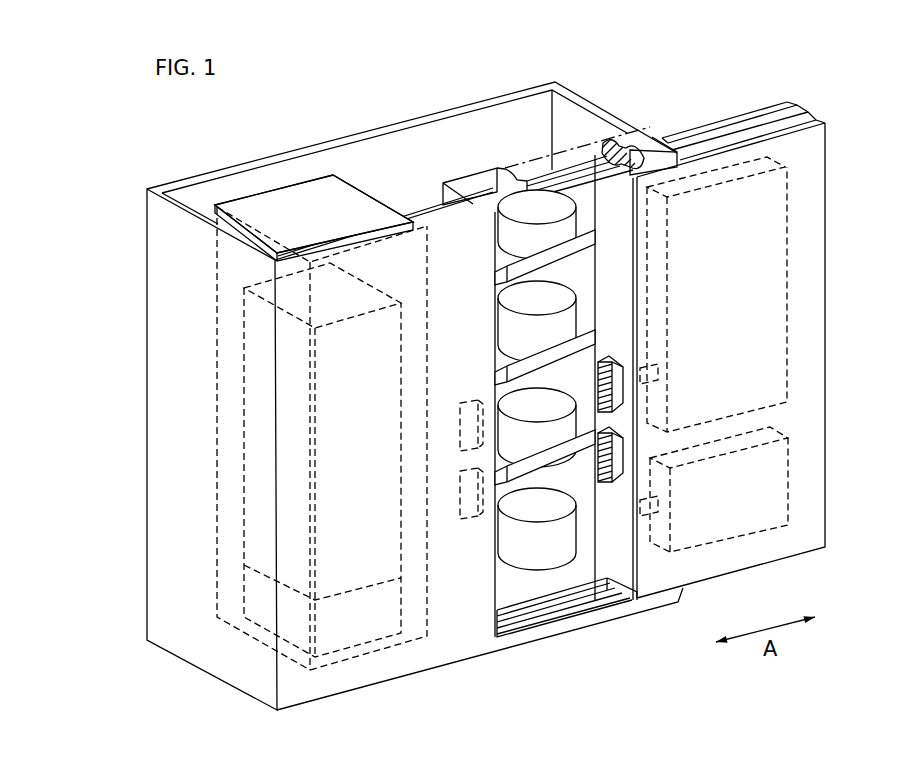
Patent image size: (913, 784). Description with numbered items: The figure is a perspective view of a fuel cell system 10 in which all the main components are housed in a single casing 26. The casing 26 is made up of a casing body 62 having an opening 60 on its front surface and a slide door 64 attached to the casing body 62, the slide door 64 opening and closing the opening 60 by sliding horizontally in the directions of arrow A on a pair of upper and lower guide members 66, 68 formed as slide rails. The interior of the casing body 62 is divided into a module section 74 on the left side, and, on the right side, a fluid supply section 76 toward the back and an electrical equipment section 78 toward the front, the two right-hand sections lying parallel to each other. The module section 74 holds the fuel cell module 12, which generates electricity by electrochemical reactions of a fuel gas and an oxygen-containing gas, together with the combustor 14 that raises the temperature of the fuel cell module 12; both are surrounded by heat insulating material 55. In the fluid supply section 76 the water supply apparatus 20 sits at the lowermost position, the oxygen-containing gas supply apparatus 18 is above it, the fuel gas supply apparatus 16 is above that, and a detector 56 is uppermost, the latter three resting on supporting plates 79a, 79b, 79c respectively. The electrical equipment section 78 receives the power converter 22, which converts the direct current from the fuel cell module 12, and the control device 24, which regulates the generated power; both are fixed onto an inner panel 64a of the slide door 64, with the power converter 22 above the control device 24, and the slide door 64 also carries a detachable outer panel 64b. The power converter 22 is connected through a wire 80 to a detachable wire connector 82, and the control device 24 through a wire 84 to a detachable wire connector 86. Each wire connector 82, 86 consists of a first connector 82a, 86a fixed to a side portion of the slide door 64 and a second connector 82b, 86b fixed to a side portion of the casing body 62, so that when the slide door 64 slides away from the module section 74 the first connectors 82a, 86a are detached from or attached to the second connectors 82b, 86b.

The fuel cell system 10 is at (214, 123).
The fuel cell module 12 is at (238, 402).
The combustor 14 is at (363, 632).
The fuel gas supply apparatus 16 is at (510, 333).
The oxygen-containing gas supply apparatus 18 is at (513, 438).
The water supply apparatus 20 is at (510, 548).
The power converter 22 is at (790, 320).
The control device 24 is at (790, 470).
The casing 26 is at (128, 271).
The heat insulating material 55 is at (357, 207).
The detector 56 is at (507, 233).
The opening 60 is at (543, 580).
The casing body 62 is at (482, 103).
The slide door 64 is at (824, 101).
The inner panel 64a is at (731, 110).
The outer panel 64b is at (815, 218).
The guide member 66 is at (600, 604).
The guide member 68 is at (577, 163).
The module section 74 is at (280, 183).
The fluid supply section 76 is at (572, 120).
The electrical equipment section 78 is at (806, 175).
The supporting plate 79a is at (497, 471).
The supporting plate 79b is at (497, 371).
The supporting plate 79c is at (497, 271).
The wire 80 is at (660, 352).
The wire connector 82 is at (611, 356).
The first connector 82a is at (624, 386).
The second connector 82b is at (458, 405).
The wire 84 is at (702, 468).
The wire connector 86 is at (610, 496).
The first connector 86a is at (624, 478).
The second connector 86b is at (458, 508).